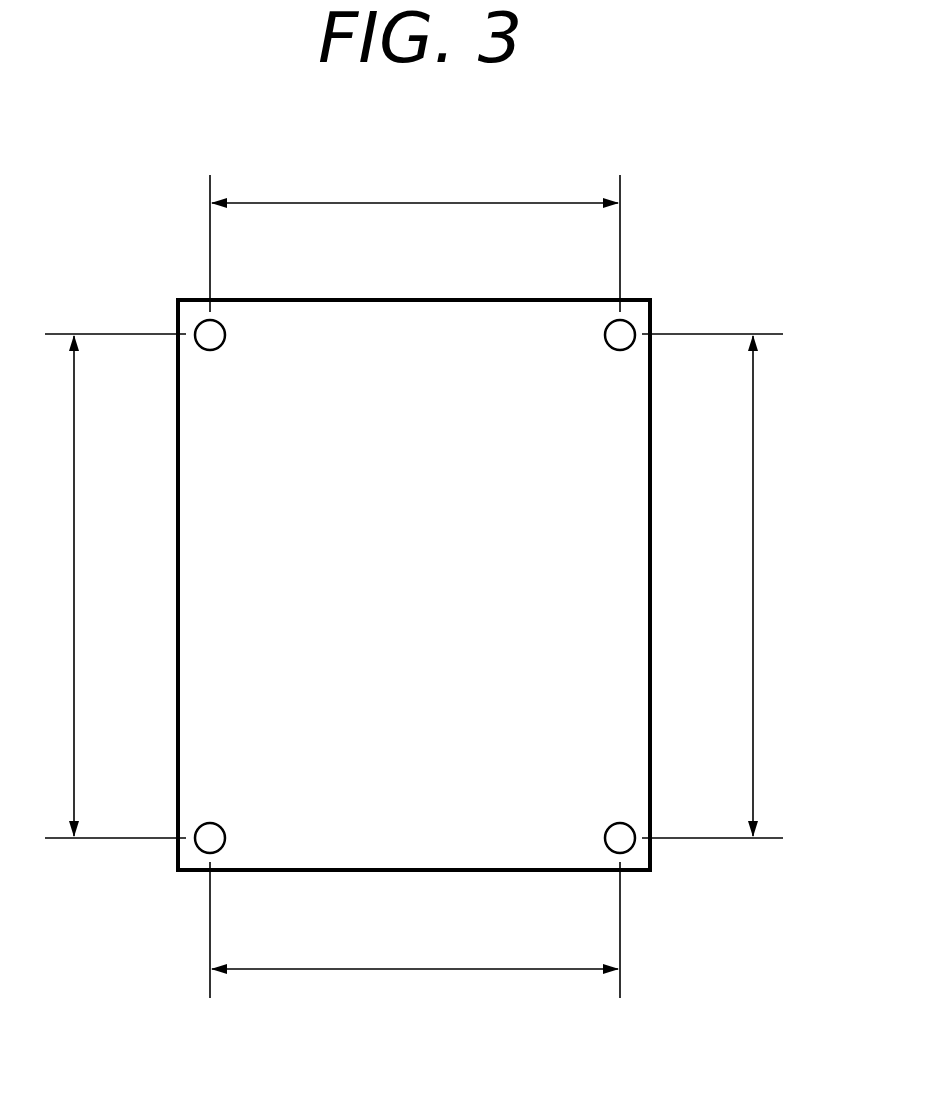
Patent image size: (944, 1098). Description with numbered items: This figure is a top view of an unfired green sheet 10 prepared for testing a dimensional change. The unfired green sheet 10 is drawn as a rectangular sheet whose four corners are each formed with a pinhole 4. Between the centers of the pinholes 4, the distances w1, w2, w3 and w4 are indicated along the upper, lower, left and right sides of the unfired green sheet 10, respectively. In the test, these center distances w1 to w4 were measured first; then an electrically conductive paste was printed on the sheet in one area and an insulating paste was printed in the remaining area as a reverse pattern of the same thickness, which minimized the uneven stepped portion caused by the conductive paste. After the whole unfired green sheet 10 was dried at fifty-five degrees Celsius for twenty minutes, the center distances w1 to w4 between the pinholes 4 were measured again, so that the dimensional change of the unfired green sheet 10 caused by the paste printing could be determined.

The unfired green sheet 10 is at (658, 255).
The pinholes 4 is at (212, 337).
The distance between centers of the pinholes (upper side) w1 is at (415, 239).
The distance between centers of the pinholes (lower side) w2 is at (415, 938).
The distance between centers of the pinholes (left side) w3 is at (102, 586).
The distance between centers of the pinholes (right side) w4 is at (725, 586).